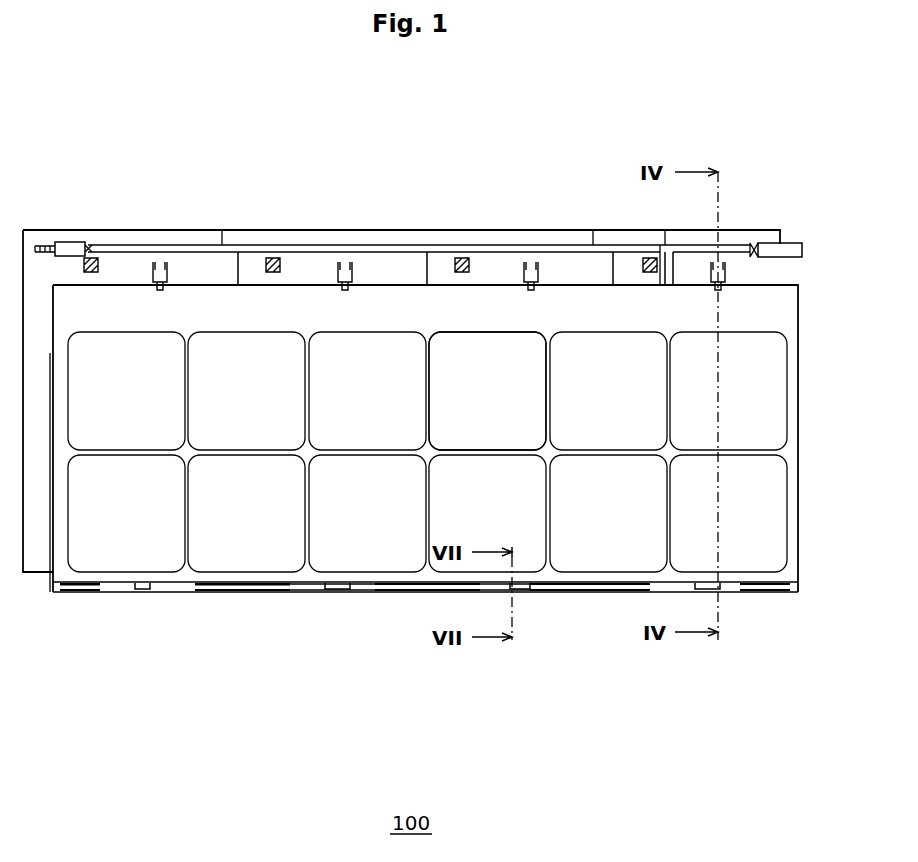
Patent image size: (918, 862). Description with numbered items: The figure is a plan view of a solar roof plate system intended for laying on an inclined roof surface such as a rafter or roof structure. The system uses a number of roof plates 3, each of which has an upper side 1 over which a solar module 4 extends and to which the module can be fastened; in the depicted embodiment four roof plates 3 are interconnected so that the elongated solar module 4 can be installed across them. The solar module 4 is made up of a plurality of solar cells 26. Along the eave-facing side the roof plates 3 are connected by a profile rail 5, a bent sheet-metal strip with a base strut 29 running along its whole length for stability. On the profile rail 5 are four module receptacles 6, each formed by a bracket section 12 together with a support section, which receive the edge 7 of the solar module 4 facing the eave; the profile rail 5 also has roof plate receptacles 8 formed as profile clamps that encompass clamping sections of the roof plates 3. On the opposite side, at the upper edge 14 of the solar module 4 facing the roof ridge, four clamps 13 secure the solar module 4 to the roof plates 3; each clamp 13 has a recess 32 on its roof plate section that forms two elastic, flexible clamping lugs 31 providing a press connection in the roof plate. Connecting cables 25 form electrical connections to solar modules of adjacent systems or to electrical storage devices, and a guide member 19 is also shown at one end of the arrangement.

The upper side 1 is at (118, 268).
The roof plate 3 is at (200, 265).
The solar module 4 is at (232, 305).
The profile rail 5 is at (100, 587).
The module receptacle 6 is at (116, 590).
The edge 7 is at (365, 592).
The roof plate receptacle 8 is at (298, 587).
The bracket section 12 is at (140, 591).
The clamp 13 is at (160, 262).
The upper edge 14 is at (396, 285).
The guide member 19 is at (92, 260).
The connecting cables 25 is at (324, 248).
The solar cells 26 is at (483, 360).
The base strut 29 is at (176, 590).
The clamping lug 31 is at (542, 262).
The recess 32 is at (534, 264).